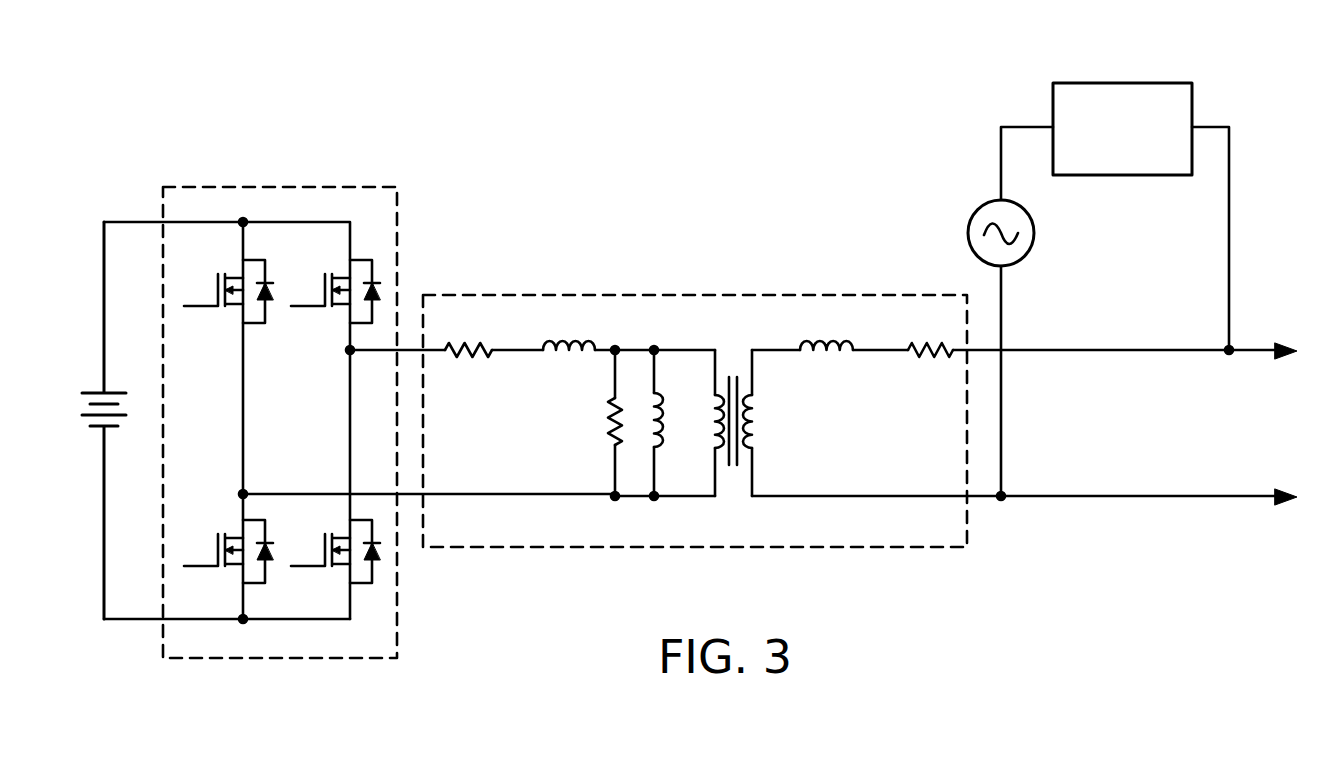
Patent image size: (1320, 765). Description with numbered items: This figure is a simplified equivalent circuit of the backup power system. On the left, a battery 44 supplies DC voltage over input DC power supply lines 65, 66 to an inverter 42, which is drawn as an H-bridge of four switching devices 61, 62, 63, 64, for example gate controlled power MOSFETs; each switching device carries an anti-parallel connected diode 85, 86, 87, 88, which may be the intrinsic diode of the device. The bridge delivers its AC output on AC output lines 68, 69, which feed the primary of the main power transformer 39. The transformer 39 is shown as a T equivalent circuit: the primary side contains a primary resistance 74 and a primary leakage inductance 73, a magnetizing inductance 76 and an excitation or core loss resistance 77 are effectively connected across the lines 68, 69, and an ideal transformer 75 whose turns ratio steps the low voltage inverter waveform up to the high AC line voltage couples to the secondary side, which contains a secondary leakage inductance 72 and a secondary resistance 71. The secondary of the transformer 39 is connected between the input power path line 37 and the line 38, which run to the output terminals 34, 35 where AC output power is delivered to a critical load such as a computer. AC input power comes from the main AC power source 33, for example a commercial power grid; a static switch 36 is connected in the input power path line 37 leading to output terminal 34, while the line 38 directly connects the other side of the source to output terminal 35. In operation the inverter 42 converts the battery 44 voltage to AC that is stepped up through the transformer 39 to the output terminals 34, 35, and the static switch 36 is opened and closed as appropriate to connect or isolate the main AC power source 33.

The main AC power source 33 is at (1037, 217).
The output terminal 34 is at (1245, 351).
The output terminal 35 is at (1250, 497).
The static switch 36 is at (1087, 83).
The input power path line 37 is at (1233, 225).
The line 38 is at (1002, 453).
The main power transformer 39 is at (575, 295).
The inverter 42 is at (295, 185).
The battery 44 is at (90, 420).
The switching device 61 is at (217, 295).
The switching device 62 is at (208, 521).
The switching device 63 is at (317, 271).
The switching device 64 is at (310, 575).
The input DC power supply line 65 is at (122, 222).
The input DC power supply line 66 is at (119, 620).
The AC output line 68 is at (316, 492).
The AC output line 69 is at (358, 352).
The secondary resistance 71 is at (928, 358).
The secondary leakage inductance 72 is at (833, 357).
The primary leakage inductance 73 is at (577, 355).
The primary resistance 74 is at (460, 358).
The ideal transformer 75 is at (753, 417).
The magnetizing inductance 76 is at (667, 430).
The excitation (core) loss resistance 77 is at (607, 418).
The anti-parallel connected diode 85 is at (275, 557).
The anti-parallel connected diode 86 is at (385, 293).
The anti-parallel connected diode 87 is at (382, 554).
The anti-parallel connected diode 88 is at (277, 292).